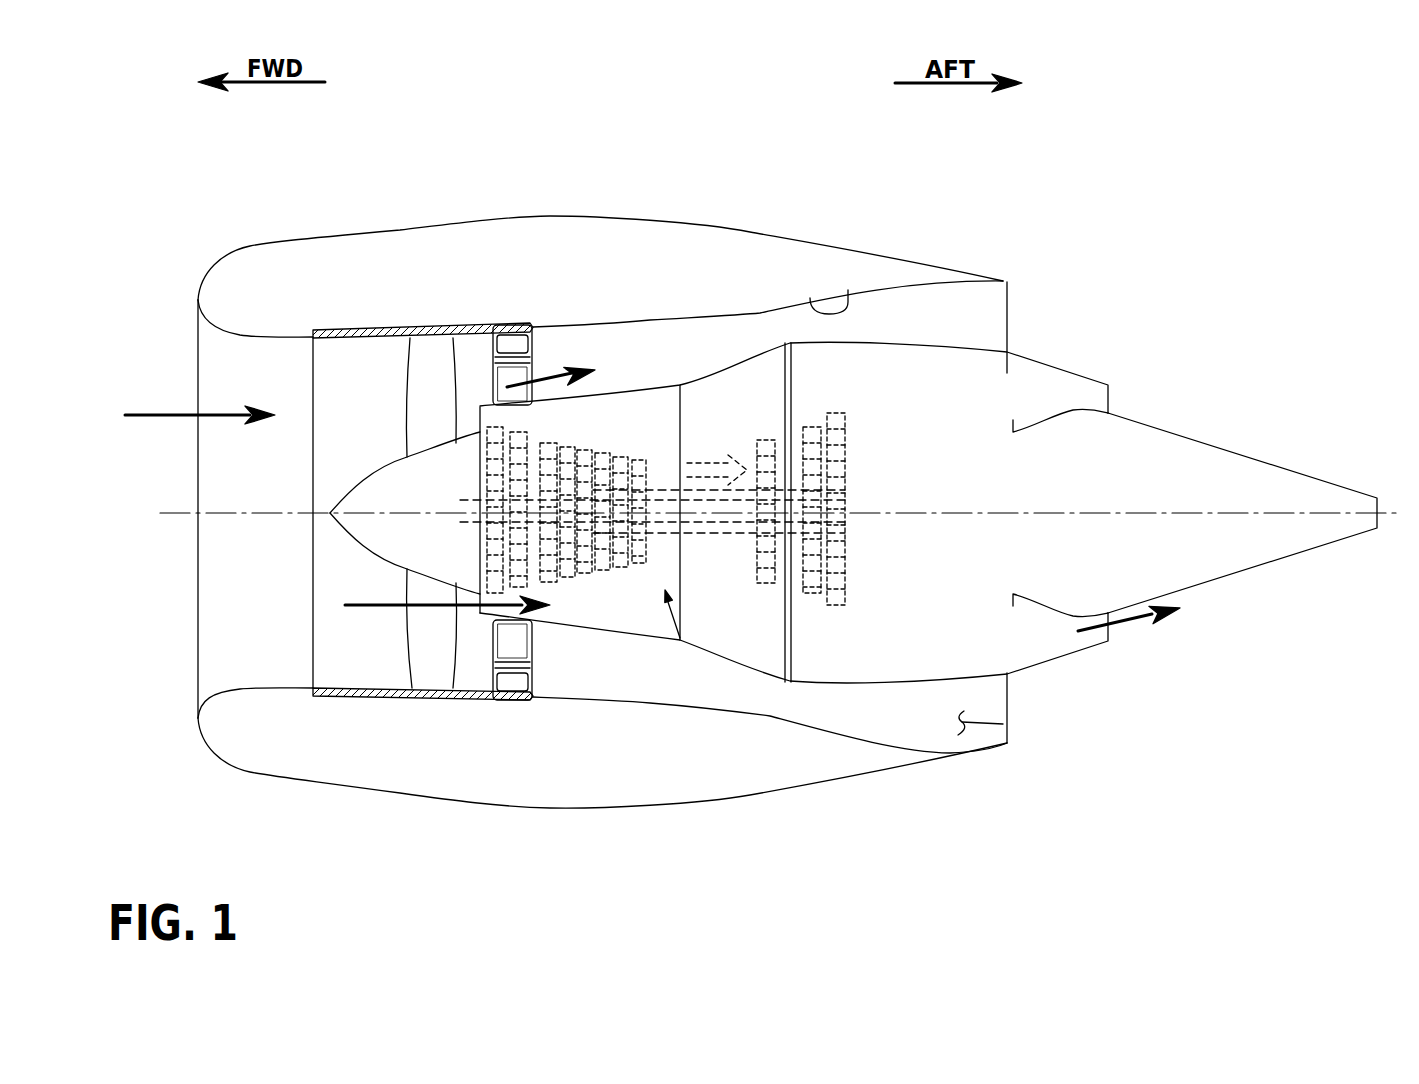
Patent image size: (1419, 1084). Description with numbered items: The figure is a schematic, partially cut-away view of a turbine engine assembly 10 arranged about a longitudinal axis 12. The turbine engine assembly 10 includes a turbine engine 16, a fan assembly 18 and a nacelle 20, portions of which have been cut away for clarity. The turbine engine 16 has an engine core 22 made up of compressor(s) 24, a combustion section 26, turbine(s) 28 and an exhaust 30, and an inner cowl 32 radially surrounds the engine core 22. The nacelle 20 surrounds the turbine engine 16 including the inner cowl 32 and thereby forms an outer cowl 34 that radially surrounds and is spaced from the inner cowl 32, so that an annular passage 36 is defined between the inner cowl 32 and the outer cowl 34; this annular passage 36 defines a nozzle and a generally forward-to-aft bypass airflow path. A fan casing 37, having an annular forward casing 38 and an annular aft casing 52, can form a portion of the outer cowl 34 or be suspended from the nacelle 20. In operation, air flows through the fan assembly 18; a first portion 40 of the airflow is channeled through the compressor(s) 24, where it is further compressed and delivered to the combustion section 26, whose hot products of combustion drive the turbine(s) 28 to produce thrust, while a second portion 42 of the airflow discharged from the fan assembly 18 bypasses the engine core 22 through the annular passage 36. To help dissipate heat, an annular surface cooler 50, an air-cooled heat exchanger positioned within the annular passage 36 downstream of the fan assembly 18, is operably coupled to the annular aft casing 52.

The turbine engine assembly 10 is at (448, 150).
The longitudinal axis 12 is at (178, 515).
The turbine engine 16 is at (660, 410).
The fan assembly 18 is at (422, 353).
The nacelle 20 is at (288, 238).
The engine core 22 is at (680, 640).
The compressor(s) 24 is at (590, 567).
The combustion section 26 is at (708, 545).
The turbine(s) 28 is at (807, 590).
The exhaust 30 is at (1103, 645).
The inner cowl 32 is at (798, 340).
The outer cowl 34 is at (848, 292).
The annular passage 36 is at (1003, 724).
The fan casing 37 is at (325, 642).
The annular forward casing 38 is at (313, 600).
The first portion of the airflow 40 is at (474, 600).
The second portion of the airflow 42 is at (552, 375).
The surface cooler 50 is at (522, 651).
The annular aft casing 52 is at (511, 310).